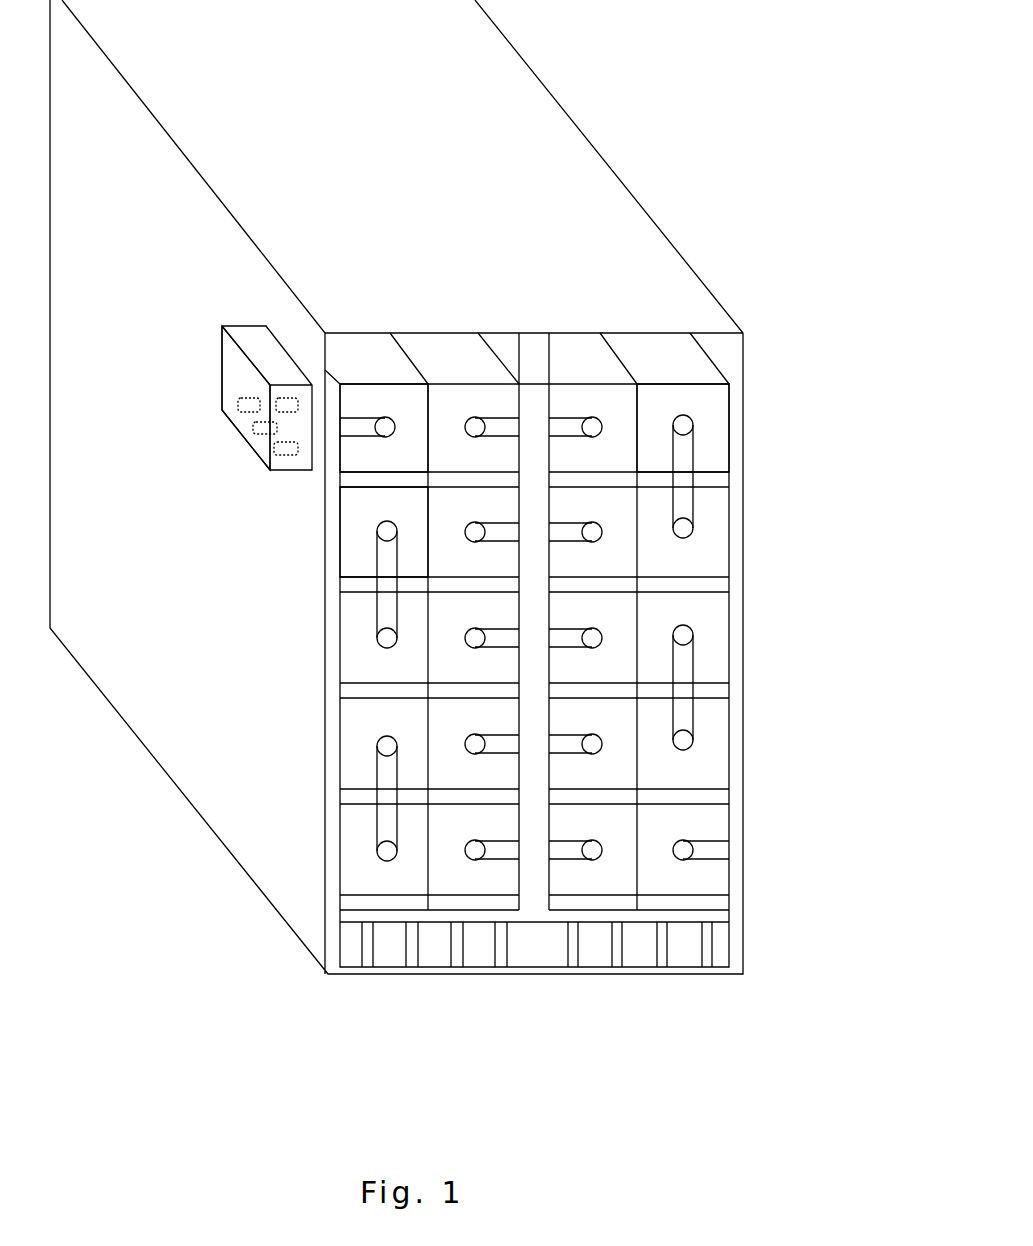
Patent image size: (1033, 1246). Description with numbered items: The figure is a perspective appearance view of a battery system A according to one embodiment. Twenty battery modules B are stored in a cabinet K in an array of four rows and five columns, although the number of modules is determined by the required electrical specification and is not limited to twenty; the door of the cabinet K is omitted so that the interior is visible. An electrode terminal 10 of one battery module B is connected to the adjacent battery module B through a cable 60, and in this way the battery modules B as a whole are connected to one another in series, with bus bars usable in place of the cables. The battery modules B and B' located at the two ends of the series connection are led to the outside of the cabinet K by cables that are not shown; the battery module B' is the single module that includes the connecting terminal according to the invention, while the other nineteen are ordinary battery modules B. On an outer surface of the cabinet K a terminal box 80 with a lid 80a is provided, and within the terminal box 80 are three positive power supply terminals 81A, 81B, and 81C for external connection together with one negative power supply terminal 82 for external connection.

The cabinet K is at (570, 155).
The battery system A is at (647, 200).
The electrode terminal 10 is at (682, 423).
The cable 60 is at (681, 455).
The battery module B is at (332, 542).
The battery module B' is at (332, 463).
The terminal box 80 is at (253, 337).
The lid 80a is at (240, 372).
The positive power supply terminal 81A is at (272, 448).
The positive power supply terminal 81B is at (256, 428).
The positive power supply terminal 81C is at (243, 403).
The negative power supply terminal 82 is at (288, 396).